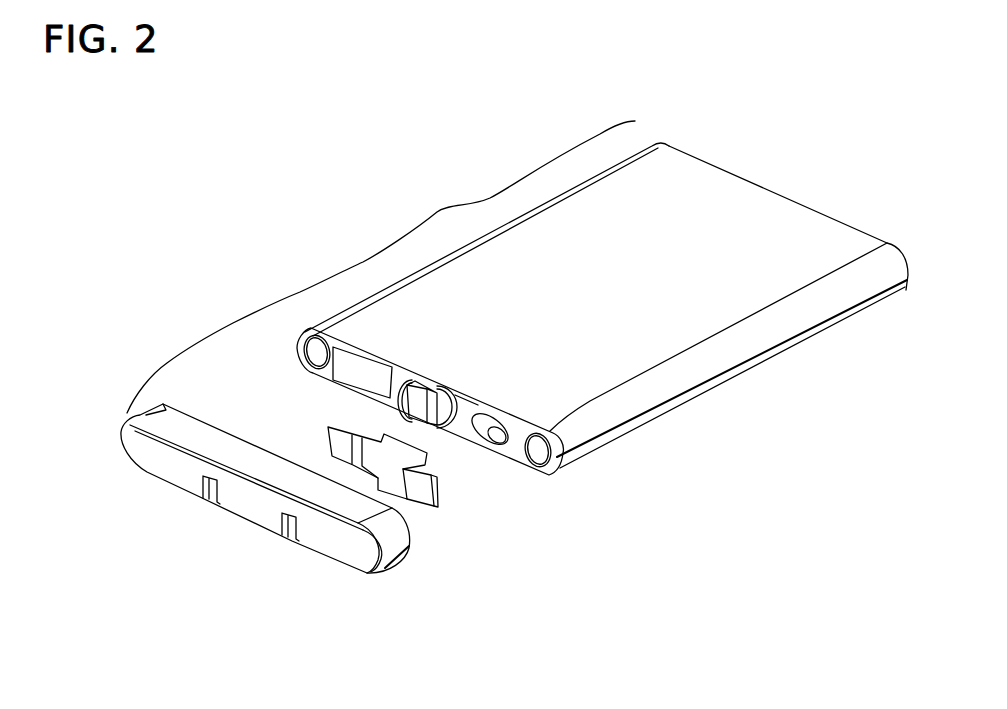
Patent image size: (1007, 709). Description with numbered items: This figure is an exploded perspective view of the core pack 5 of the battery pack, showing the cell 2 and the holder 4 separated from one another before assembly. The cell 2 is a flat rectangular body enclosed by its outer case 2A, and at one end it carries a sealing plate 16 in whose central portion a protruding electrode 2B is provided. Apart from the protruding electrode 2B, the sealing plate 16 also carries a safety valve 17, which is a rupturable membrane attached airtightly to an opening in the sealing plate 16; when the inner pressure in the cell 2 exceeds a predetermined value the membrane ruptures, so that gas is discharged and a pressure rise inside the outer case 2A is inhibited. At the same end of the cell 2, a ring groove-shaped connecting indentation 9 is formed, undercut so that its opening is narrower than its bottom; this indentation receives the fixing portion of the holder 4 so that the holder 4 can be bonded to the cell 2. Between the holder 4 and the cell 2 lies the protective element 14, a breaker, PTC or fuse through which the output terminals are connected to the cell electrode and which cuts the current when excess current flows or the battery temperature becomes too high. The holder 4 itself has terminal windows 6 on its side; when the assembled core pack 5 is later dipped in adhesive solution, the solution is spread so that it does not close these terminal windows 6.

The cell 2 is at (728, 400).
The outer case 2A is at (629, 330).
The protruding electrode portion 2B is at (416, 400).
The holder 4 is at (392, 573).
The core pack 5 is at (381, 267).
The terminal windows 6 is at (207, 504).
The connecting indentation 9 is at (303, 358).
The protective element 14 is at (433, 445).
The sealing plate 16 is at (463, 405).
The safety valve 17 is at (492, 438).